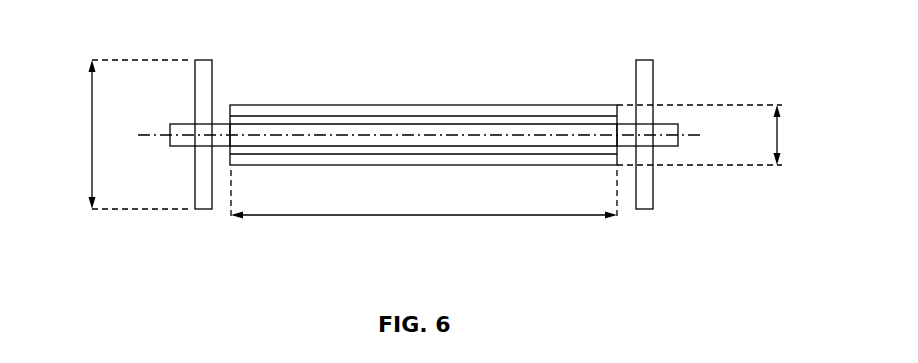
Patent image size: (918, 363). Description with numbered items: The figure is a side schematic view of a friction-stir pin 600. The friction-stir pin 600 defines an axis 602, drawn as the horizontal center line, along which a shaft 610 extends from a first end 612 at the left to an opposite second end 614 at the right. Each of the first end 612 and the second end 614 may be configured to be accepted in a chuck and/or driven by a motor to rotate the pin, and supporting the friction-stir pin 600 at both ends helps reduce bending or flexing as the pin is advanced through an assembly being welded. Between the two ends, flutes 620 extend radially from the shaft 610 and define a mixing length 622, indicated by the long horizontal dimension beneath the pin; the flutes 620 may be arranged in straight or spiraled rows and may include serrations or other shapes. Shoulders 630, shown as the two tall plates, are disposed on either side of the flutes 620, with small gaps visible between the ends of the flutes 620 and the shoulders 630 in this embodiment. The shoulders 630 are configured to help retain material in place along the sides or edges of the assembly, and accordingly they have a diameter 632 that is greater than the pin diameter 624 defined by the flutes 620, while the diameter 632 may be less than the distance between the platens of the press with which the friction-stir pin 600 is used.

The friction-stir pin 600 is at (544, 66).
The axis 602 is at (704, 134).
The shaft 610 is at (218, 123).
The first end 612 is at (169, 148).
The second end 614 is at (681, 149).
The flutes 620 is at (424, 104).
The mixing length 622 is at (424, 216).
The pin diameter 624 is at (780, 136).
The shoulders 630 is at (204, 58).
The diameter 632 is at (92, 103).